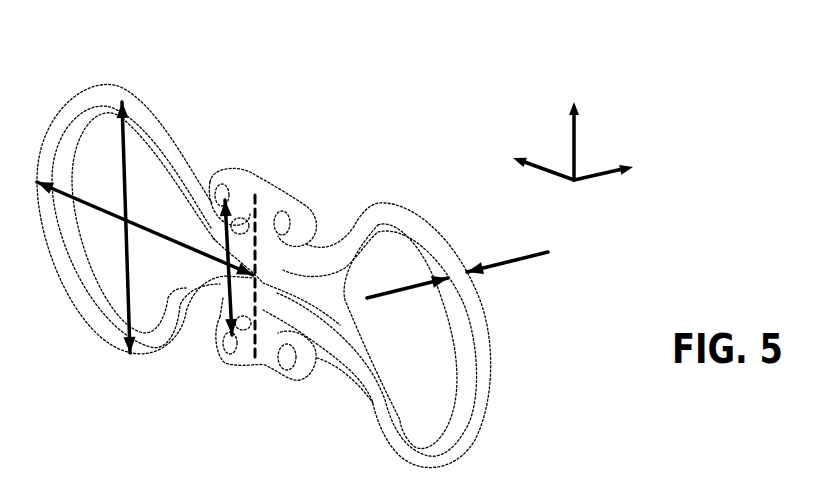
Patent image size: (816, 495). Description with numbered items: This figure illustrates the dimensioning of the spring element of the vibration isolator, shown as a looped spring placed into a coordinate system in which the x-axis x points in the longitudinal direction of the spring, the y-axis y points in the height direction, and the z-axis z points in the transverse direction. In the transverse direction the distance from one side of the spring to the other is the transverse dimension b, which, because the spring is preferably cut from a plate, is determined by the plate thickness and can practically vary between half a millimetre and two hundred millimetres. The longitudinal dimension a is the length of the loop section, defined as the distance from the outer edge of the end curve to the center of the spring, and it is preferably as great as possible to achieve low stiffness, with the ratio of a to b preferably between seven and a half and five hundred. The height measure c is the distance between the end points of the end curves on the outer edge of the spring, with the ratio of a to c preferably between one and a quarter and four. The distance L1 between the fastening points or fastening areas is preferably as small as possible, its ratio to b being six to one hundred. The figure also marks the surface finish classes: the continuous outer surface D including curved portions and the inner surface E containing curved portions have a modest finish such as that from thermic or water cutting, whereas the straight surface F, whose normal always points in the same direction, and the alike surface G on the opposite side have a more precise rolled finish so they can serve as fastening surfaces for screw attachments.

The straight surface F is at (78, 102).
The opposite straight surface G is at (122, 88).
The inner surface E is at (77, 255).
The outer surface D is at (480, 333).
The longitudinal dimension a is at (145, 225).
The transverse dimension b is at (457, 267).
The height dimension c is at (132, 227).
The distance between fastening points L1 is at (215, 267).
The x-axis x is at (543, 160).
The y-axis y is at (574, 130).
The z-axis z is at (603, 162).